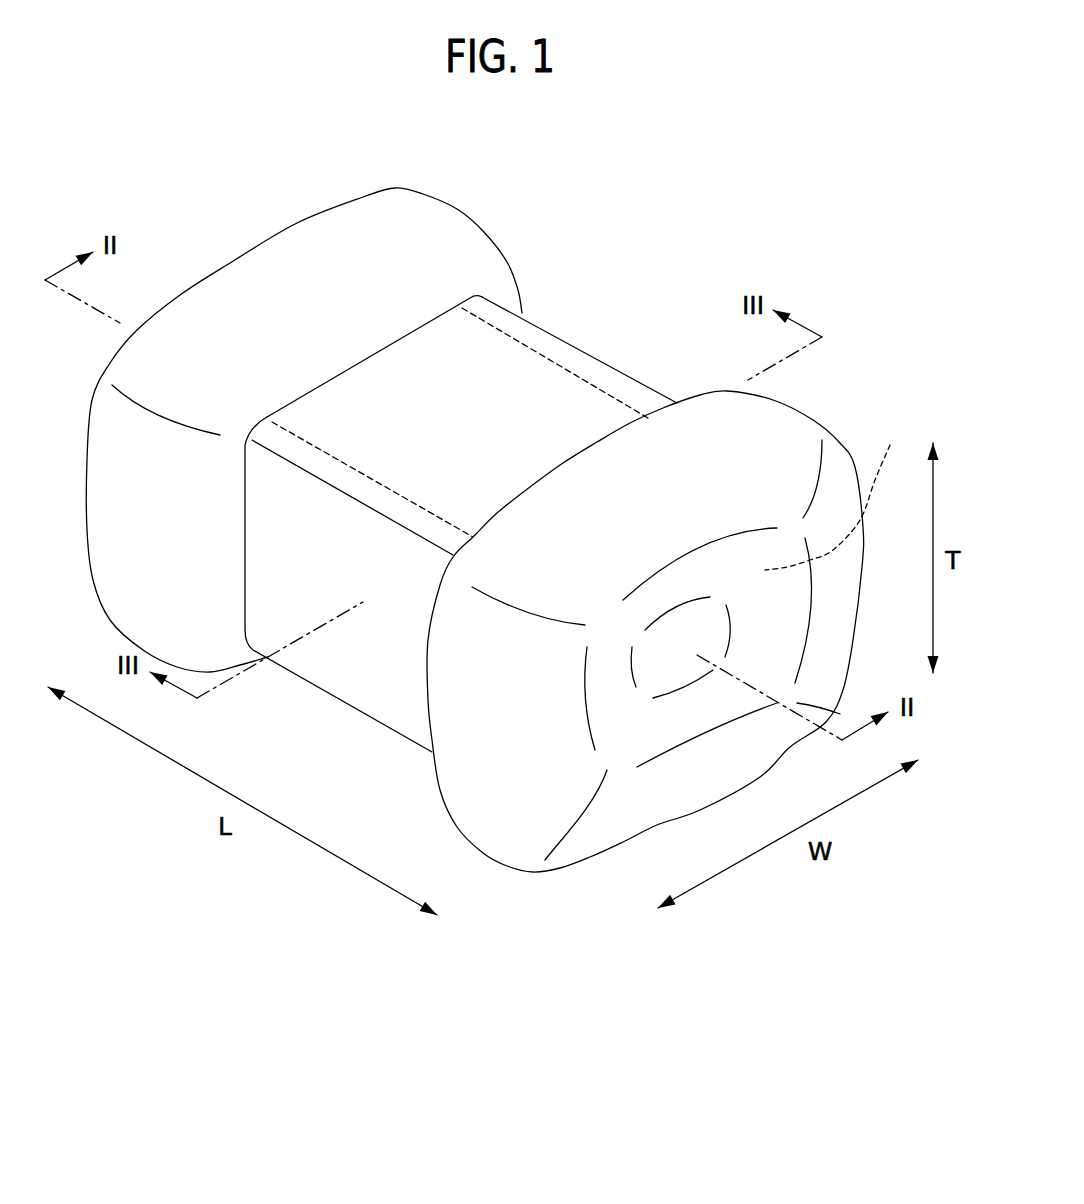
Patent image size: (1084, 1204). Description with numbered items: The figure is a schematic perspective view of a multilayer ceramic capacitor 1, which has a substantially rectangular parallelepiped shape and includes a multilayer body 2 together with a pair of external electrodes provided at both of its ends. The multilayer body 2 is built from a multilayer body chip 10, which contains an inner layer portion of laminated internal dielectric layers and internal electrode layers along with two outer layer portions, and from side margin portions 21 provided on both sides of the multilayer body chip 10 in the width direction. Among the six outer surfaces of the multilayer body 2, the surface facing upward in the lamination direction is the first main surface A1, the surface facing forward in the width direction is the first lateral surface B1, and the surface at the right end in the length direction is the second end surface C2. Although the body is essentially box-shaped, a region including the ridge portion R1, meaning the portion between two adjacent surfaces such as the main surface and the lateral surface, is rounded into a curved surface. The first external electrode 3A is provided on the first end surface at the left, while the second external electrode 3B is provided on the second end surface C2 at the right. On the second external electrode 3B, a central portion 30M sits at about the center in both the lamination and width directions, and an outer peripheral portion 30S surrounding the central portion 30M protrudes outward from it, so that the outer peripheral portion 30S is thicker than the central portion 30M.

The multilayer ceramic capacitor 1 is at (840, 304).
The multilayer body chip 10 is at (392, 380).
The multilayer body 2 is at (470, 357).
The first external electrode 3A is at (364, 195).
The second external electrode 3B is at (818, 420).
The side margin portion 21 is at (612, 377).
The ridge portion R1 is at (552, 332).
The first main surface A1 is at (458, 434).
The first lateral surface B1 is at (385, 580).
The second end surface C2 is at (842, 490).
The central portion 30M is at (653, 663).
The outer peripheral portion 30S is at (677, 795).